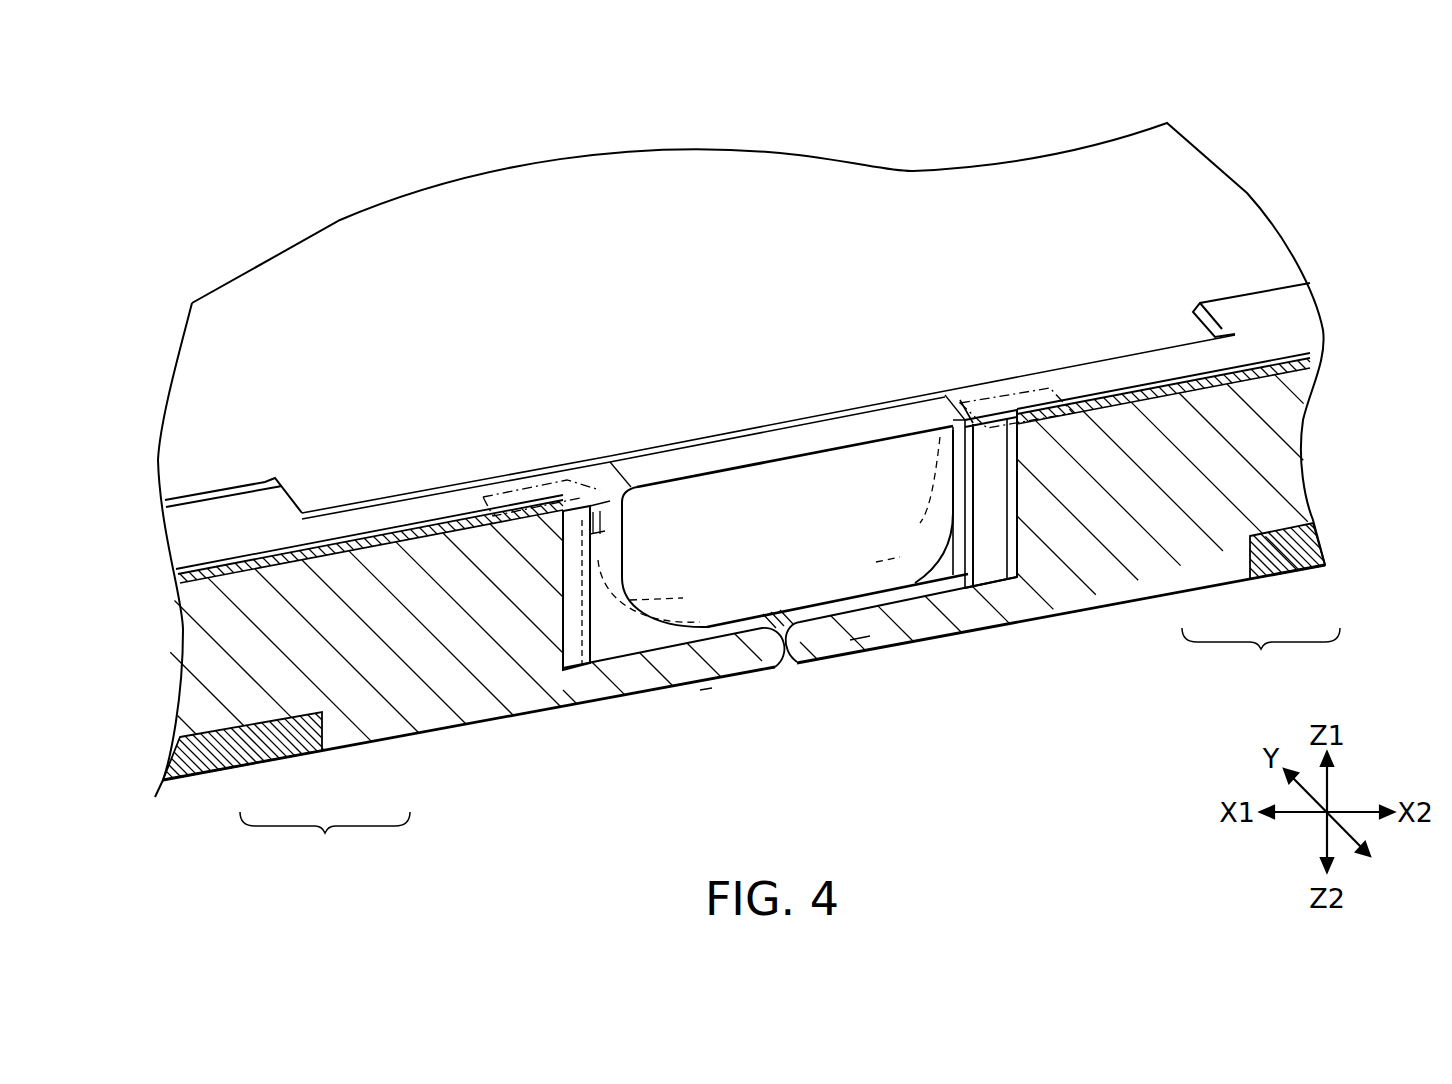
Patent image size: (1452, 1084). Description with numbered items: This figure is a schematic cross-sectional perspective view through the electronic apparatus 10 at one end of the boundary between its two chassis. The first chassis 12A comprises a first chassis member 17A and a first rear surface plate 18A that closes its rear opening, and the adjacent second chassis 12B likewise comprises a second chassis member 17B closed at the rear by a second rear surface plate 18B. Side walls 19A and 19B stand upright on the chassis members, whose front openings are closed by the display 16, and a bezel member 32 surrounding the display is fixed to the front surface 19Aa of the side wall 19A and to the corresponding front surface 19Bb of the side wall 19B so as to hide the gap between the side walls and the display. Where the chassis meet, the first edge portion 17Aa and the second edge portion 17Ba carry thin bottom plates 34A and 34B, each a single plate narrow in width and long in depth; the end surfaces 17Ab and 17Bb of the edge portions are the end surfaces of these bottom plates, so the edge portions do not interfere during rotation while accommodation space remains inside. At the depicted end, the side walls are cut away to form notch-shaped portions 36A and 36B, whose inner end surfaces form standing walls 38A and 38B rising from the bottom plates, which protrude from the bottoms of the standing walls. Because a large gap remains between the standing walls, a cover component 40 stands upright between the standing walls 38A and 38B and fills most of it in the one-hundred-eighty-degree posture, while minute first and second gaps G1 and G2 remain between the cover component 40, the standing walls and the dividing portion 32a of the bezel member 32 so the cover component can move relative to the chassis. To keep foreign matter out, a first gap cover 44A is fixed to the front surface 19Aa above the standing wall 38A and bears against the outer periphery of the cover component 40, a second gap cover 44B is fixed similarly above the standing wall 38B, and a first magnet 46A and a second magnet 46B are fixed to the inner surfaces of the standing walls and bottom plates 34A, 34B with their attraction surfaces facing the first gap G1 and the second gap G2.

The electronic apparatus 10 is at (175, 106).
The display 16 is at (882, 184).
The bezel member 32 is at (190, 504).
The dividing portion 32a is at (905, 399).
The front surface of the side wall 19Aa is at (215, 563).
The side walls 19A is at (205, 624).
The first chassis member 17A is at (378, 718).
The first rear surface plate 18A is at (275, 745).
The first chassis 12A is at (325, 839).
The bottom plate 34A is at (737, 664).
The first edge portion 17Aa is at (701, 690).
The end surface 17Ab is at (818, 658).
The end surface 17Bb is at (792, 660).
The bottom plate 34B is at (905, 655).
The second edge portion 17Ba is at (862, 638).
The second chassis member 17B is at (1213, 553).
The second rear surface plate 18B is at (1293, 553).
The second chassis 12B is at (1261, 653).
The side walls 19B is at (1290, 424).
The thin layer on second base 19Bb is at (1300, 354).
The notch-shaped portion 36A is at (614, 640).
The standing wall 38A is at (563, 660).
The first magnet 46A is at (572, 513).
The first gap G1 is at (606, 482).
The cover component 40 is at (702, 458).
The first gap cover 44A is at (660, 600).
The second gap cover 44B is at (876, 562).
The second gap G2 is at (947, 395).
The second magnet 46B is at (997, 477).
The notch-shaped portion 36B is at (957, 598).
The standing wall 38B is at (1013, 518).